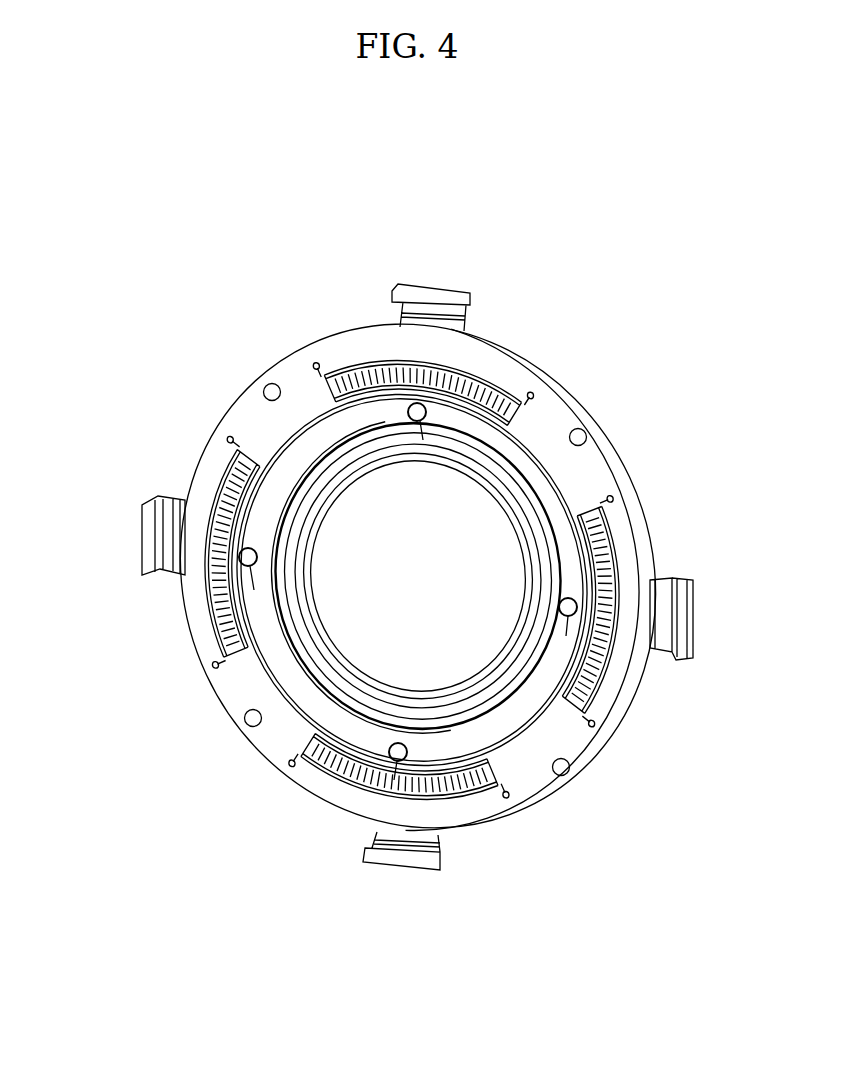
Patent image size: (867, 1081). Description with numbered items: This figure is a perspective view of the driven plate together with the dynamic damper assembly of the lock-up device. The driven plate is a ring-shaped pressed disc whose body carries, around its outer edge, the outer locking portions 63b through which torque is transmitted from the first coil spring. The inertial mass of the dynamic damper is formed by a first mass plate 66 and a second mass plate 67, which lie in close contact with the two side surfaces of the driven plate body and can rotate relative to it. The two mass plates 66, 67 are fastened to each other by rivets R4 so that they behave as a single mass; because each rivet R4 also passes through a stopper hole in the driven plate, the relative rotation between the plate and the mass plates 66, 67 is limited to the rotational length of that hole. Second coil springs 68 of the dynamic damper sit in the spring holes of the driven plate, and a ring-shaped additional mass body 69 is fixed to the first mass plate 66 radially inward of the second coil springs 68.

The outer locking portion 63b is at (434, 291).
The first mass plate 66 is at (412, 576).
The second mass plate 67 is at (648, 520).
The second coil spring 68 is at (476, 386).
The additional mass body 69 is at (543, 498).
The rivet R4 is at (267, 390).